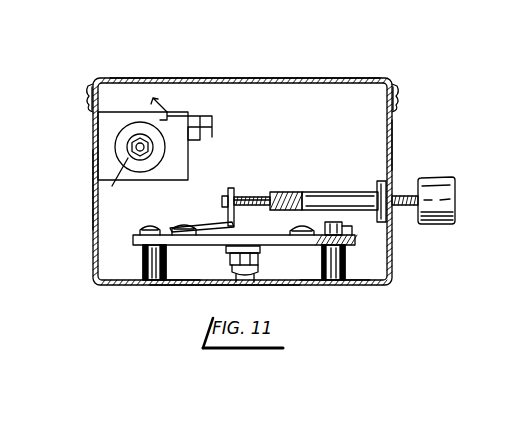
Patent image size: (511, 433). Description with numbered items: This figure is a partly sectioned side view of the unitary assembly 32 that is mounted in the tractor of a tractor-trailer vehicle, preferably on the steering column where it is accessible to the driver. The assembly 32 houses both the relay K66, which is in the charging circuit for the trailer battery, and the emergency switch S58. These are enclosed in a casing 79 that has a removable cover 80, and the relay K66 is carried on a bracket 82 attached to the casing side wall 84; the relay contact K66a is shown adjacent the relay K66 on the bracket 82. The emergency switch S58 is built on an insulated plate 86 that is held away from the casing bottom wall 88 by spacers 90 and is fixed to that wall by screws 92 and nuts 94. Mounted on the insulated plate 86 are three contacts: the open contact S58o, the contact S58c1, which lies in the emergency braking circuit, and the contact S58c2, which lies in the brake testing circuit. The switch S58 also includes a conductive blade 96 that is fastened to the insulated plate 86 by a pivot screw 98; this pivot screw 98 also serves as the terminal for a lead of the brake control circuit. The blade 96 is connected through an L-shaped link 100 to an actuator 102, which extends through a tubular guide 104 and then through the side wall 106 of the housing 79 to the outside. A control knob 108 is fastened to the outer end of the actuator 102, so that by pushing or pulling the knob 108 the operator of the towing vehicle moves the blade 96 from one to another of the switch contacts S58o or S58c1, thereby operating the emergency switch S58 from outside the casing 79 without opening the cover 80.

The casing 79 is at (96, 261).
The removable cover 80 is at (168, 78).
The casing side wall 84 is at (97, 187).
The side wall of housing 106 is at (393, 142).
The unitary assembly 32 is at (209, 283).
The casing bottom wall 88 is at (175, 284).
The screws 92 is at (332, 284).
The bracket 82 is at (157, 178).
The relay K66 is at (113, 141).
The relay contact bracket K66a is at (214, 137).
The insulated plate 86 is at (169, 240).
The spacers 90 is at (152, 270).
The nuts 94 is at (143, 232).
The contact S58c1 is at (172, 222).
The conductive blade 96 is at (174, 220).
The L-shaped link 100 is at (232, 190).
The emergency switch S58 is at (248, 184).
The actuator 102 is at (259, 196).
The tubular guide 104 is at (354, 192).
The control knob 108 is at (434, 178).
The open contact S58o is at (306, 229).
The contact S58c2 is at (256, 246).
The pivot screw 98 is at (246, 274).